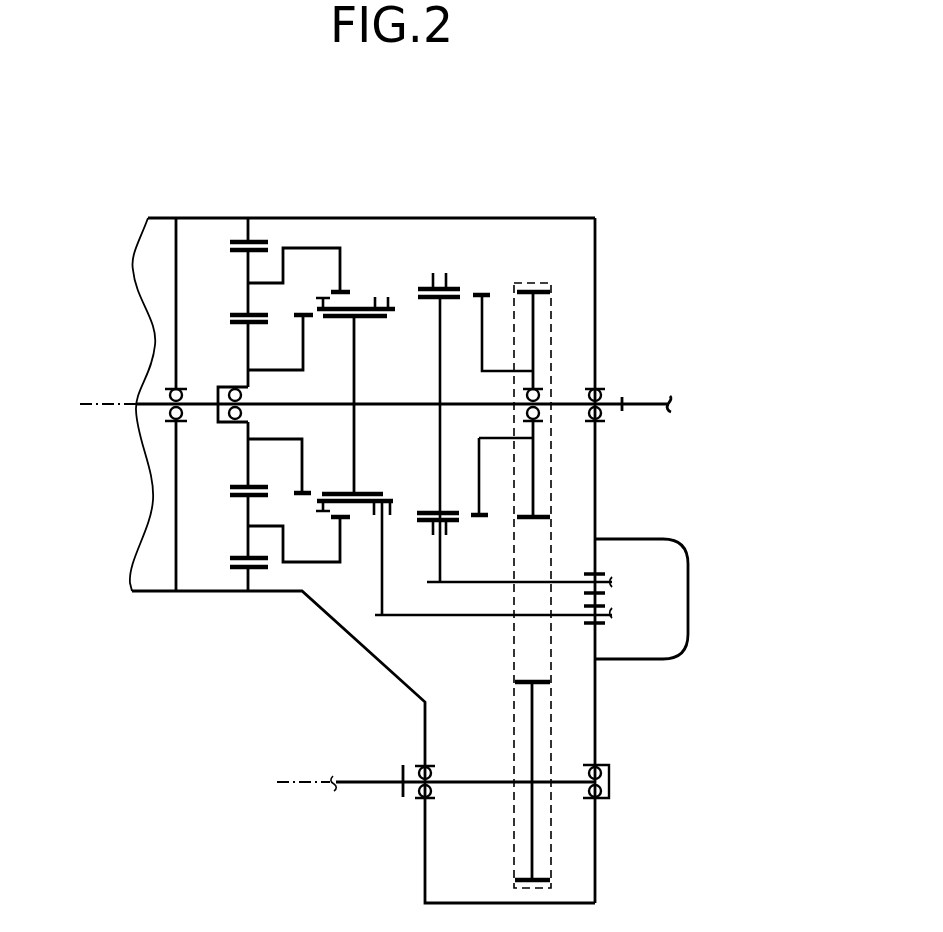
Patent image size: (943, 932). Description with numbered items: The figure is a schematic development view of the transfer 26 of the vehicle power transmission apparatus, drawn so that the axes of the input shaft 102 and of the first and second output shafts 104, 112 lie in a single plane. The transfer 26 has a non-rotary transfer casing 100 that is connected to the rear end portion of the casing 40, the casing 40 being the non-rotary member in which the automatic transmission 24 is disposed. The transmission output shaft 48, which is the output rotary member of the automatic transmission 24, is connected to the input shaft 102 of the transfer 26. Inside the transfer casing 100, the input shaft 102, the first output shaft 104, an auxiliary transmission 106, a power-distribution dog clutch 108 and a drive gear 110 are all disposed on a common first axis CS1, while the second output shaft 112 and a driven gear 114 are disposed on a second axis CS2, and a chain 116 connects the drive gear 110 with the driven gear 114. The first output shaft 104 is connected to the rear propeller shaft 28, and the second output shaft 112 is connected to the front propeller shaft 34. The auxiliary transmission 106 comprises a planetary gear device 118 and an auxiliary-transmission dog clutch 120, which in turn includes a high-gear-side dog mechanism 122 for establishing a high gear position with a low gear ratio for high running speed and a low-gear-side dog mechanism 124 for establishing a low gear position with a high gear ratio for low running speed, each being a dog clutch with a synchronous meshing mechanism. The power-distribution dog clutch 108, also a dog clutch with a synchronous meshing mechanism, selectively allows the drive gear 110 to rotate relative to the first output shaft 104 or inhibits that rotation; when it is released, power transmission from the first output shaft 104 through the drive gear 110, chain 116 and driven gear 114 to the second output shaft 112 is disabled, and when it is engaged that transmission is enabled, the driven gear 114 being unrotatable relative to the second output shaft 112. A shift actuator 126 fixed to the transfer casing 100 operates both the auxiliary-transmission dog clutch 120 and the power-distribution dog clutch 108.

The transfer 26 is at (648, 172).
The automatic transmission 24 is at (141, 270).
The casing 40 is at (162, 218).
The transmission output shaft 48 is at (153, 408).
The rear propeller shaft 28 is at (642, 402).
The front propeller shaft 34 is at (372, 785).
The transfer casing 100 is at (505, 218).
The input shaft 102 is at (198, 408).
The first output shaft 104 is at (566, 402).
The auxiliary transmission 106 is at (299, 183).
The power-distribution dog clutch 108 is at (463, 545).
The drive gear 110 is at (538, 295).
The second output shaft 112 is at (468, 779).
The driven gear 114 is at (540, 875).
The chain 116 is at (553, 535).
The planetary gear device 118 is at (247, 602).
The auxiliary-transmission dog clutch 120 is at (337, 575).
The high-gear-side dog mechanism 122 is at (301, 296).
The low-gear-side dog mechanism 124 is at (330, 288).
The shift actuator 126 is at (634, 650).
The first axis CS1 is at (92, 402).
The second axis CS2 is at (288, 778).